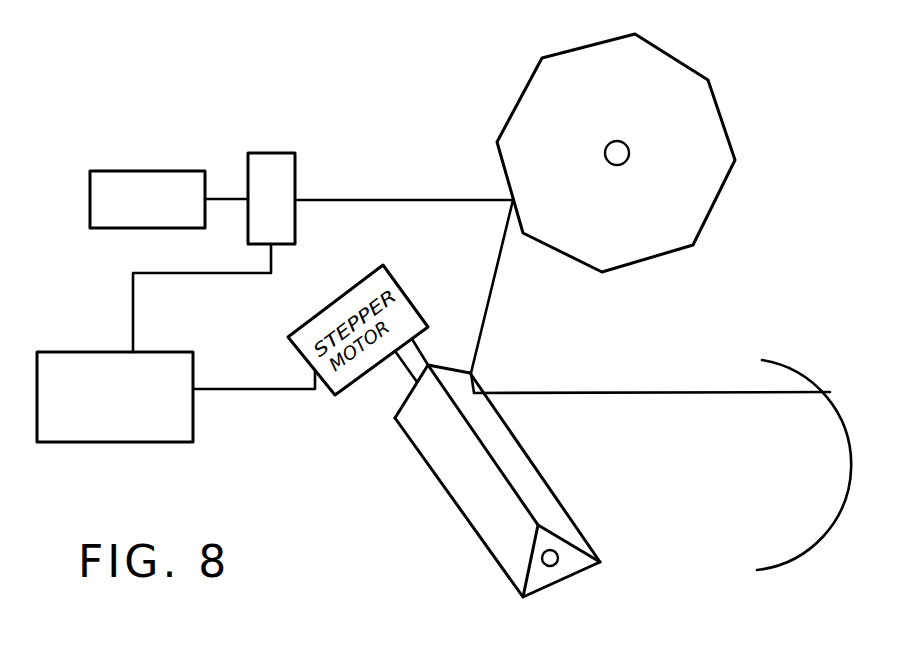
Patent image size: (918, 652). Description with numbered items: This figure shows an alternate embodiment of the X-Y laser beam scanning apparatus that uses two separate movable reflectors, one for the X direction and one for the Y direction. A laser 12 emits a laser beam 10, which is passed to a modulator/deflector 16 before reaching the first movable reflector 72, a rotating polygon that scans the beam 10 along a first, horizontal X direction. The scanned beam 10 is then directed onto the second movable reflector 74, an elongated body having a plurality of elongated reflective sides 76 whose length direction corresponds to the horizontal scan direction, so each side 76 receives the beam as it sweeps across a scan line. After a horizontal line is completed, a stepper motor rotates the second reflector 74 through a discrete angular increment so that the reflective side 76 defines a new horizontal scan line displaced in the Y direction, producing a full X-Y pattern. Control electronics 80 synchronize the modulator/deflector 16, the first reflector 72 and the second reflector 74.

The laser beam 10 is at (228, 199).
The laser 12 is at (112, 148).
The modulator/deflector 16 is at (296, 228).
The first movable reflector 72 is at (727, 160).
The second movable reflector 74 is at (447, 472).
The reflective sides 76 is at (535, 483).
The control electronics 80 is at (125, 442).